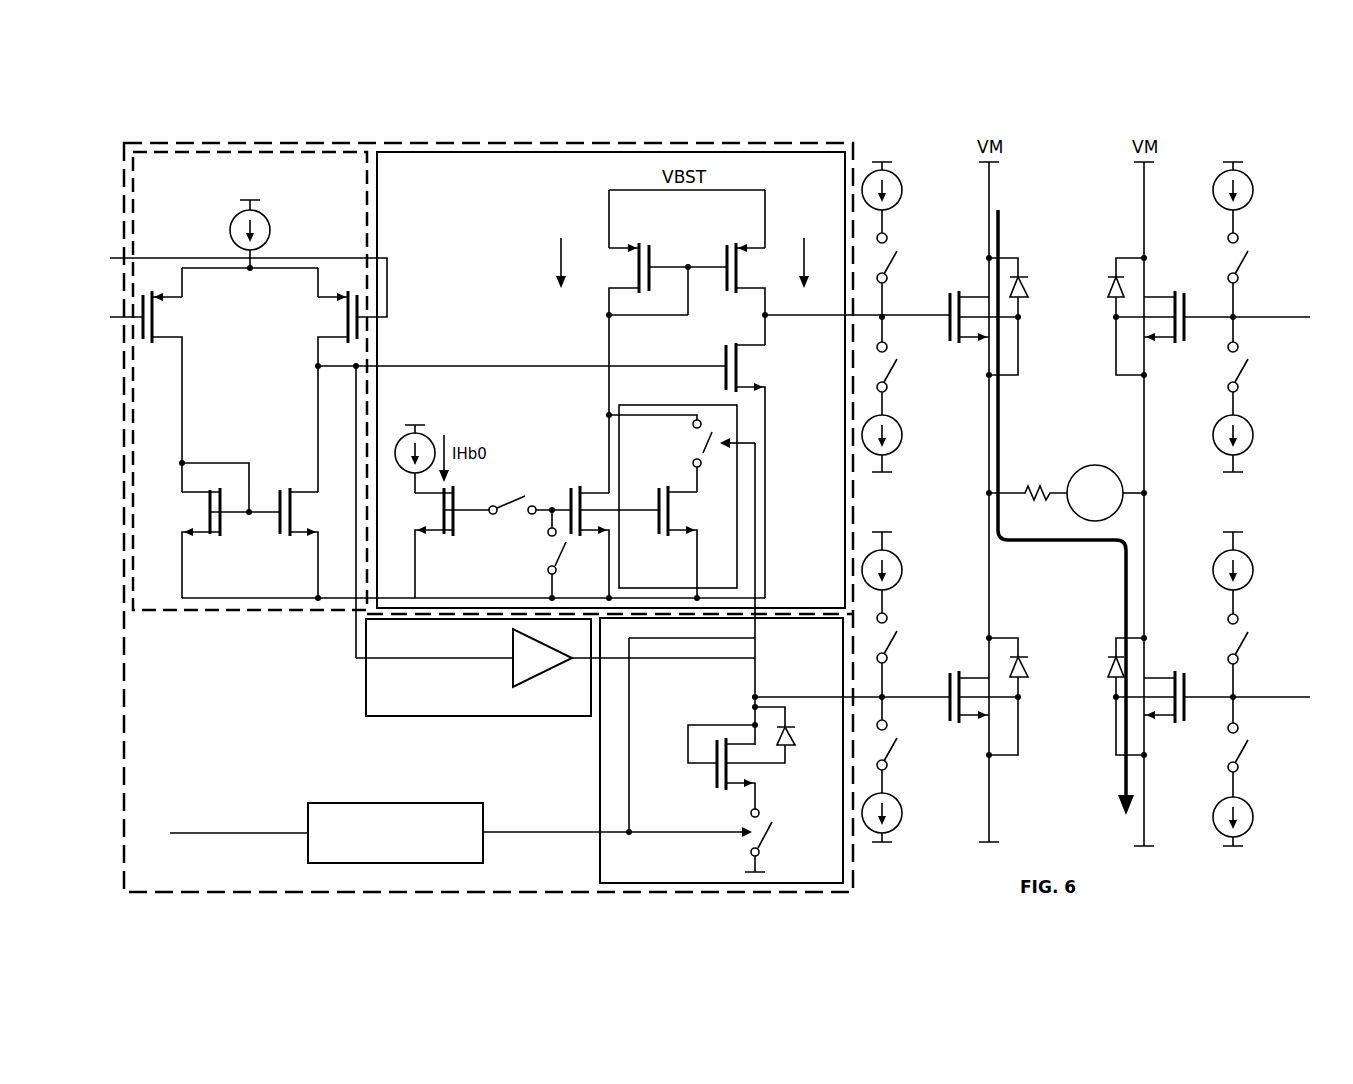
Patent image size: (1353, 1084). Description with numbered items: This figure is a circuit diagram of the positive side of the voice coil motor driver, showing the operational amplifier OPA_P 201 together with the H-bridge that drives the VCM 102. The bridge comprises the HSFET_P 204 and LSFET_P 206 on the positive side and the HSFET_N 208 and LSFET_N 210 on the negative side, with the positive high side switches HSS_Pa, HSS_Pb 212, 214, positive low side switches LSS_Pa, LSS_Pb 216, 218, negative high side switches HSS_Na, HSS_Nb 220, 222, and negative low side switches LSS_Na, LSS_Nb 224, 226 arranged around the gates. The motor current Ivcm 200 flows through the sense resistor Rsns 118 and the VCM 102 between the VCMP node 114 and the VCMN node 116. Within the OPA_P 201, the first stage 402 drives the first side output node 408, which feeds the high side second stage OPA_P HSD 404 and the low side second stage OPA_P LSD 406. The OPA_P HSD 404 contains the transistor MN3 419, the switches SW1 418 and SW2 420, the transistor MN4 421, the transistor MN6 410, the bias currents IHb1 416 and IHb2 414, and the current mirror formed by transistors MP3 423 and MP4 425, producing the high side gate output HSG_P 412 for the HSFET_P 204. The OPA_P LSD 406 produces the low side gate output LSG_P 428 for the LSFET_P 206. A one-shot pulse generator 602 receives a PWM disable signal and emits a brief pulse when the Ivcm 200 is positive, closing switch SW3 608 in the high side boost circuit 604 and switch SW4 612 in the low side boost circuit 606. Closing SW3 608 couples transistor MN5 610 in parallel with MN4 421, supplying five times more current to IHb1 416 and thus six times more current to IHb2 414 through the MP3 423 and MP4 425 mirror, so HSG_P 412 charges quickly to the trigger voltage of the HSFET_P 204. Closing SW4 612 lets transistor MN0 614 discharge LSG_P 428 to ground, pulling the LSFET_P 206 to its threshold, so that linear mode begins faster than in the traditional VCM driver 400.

The traditional VCM driver 400 is at (1291, 131).
The OPA_P 201 is at (268, 732).
The OPA_P first stage 402 is at (203, 211).
The OPA_P high side second stage (OPA_P HSD) 404 is at (473, 228).
The OPA_P low side second stage (OPA_P LSD) 406 is at (425, 690).
The first side output node 408 is at (488, 364).
The transistor MN6 410 is at (723, 359).
The high side gate output (HSG_P) 412 is at (768, 318).
The high side current IHb2 414 is at (806, 262).
The high side current IHb1 416 is at (556, 262).
The switch SW1 418 is at (516, 500).
The transistor MN3 419 is at (456, 522).
The switch SW2 420 is at (544, 555).
The transistor MN4 421 is at (570, 497).
The transistor MP3 423 is at (653, 256).
The transistor MP4 425 is at (718, 256).
The low side gate output (LSG_P) 428 is at (752, 695).
The one-shot pulse generator 602 is at (395, 803).
The high side boost circuit 604 is at (745, 491).
The low side boost circuit 606 is at (594, 746).
The switch SW3 608 is at (705, 447).
The transistor MN5 610 is at (659, 526).
The switch SW4 612 is at (768, 835).
The transistor MN0 614 is at (712, 778).
The HSFET_P 204 is at (1042, 247).
The LSFET_P 206 is at (1013, 628).
The HSFET_N 208 is at (1099, 336).
The LSFET_N 210 is at (1099, 771).
The positive high side switch HSS_Pa 212 is at (893, 264).
The positive high side switch HSS_Pb 214 is at (893, 369).
The positive low side switch LSS_Pa 216 is at (893, 641).
The positive low side switch LSS_Pb 218 is at (893, 748).
The negative high side switch HSS_Na 220 is at (1245, 263).
The negative high side switch HSS_Nb 222 is at (1245, 369).
The negative low side switch LSS_Na 224 is at (1246, 644).
The negative low side switch LSS_Nb 226 is at (1246, 751).
The VCM 102 is at (1098, 465).
The VCMP node 114 is at (985, 496).
The VCMN node 116 is at (1147, 491).
The Rsns 118 is at (1036, 489).
The Ivcm 200 is at (1087, 544).